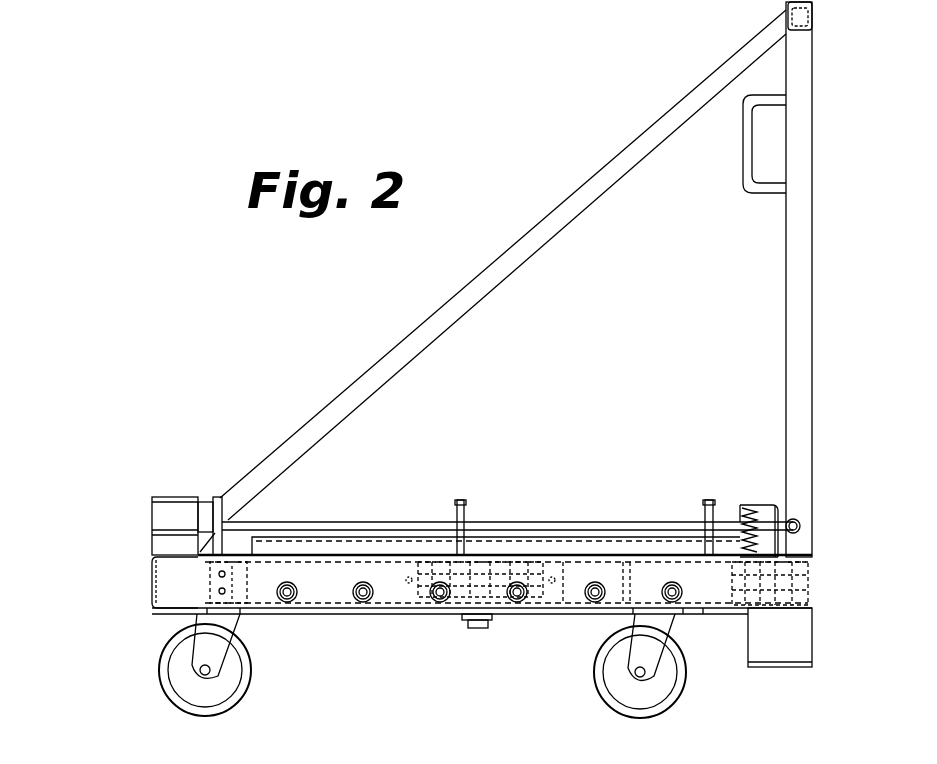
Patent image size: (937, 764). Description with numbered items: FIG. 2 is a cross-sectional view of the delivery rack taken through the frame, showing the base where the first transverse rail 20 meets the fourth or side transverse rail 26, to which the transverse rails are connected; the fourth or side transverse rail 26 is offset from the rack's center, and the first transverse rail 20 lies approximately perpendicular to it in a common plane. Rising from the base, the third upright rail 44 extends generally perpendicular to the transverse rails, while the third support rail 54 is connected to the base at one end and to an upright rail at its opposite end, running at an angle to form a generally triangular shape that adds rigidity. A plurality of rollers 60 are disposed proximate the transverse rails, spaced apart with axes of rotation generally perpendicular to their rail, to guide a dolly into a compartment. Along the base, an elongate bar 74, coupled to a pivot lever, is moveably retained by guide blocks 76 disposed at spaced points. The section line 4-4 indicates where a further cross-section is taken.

The section line 4- 4 is at (35, 350).
The first transverse rail 20 is at (325, 593).
The fourth or side transverse rail 26 is at (157, 588).
The third upright rail 44 is at (815, 259).
The third support rail 54 is at (457, 305).
The rollers 60 is at (370, 598).
The elongate bar 74 is at (553, 523).
The guide blocks 76 is at (457, 503).